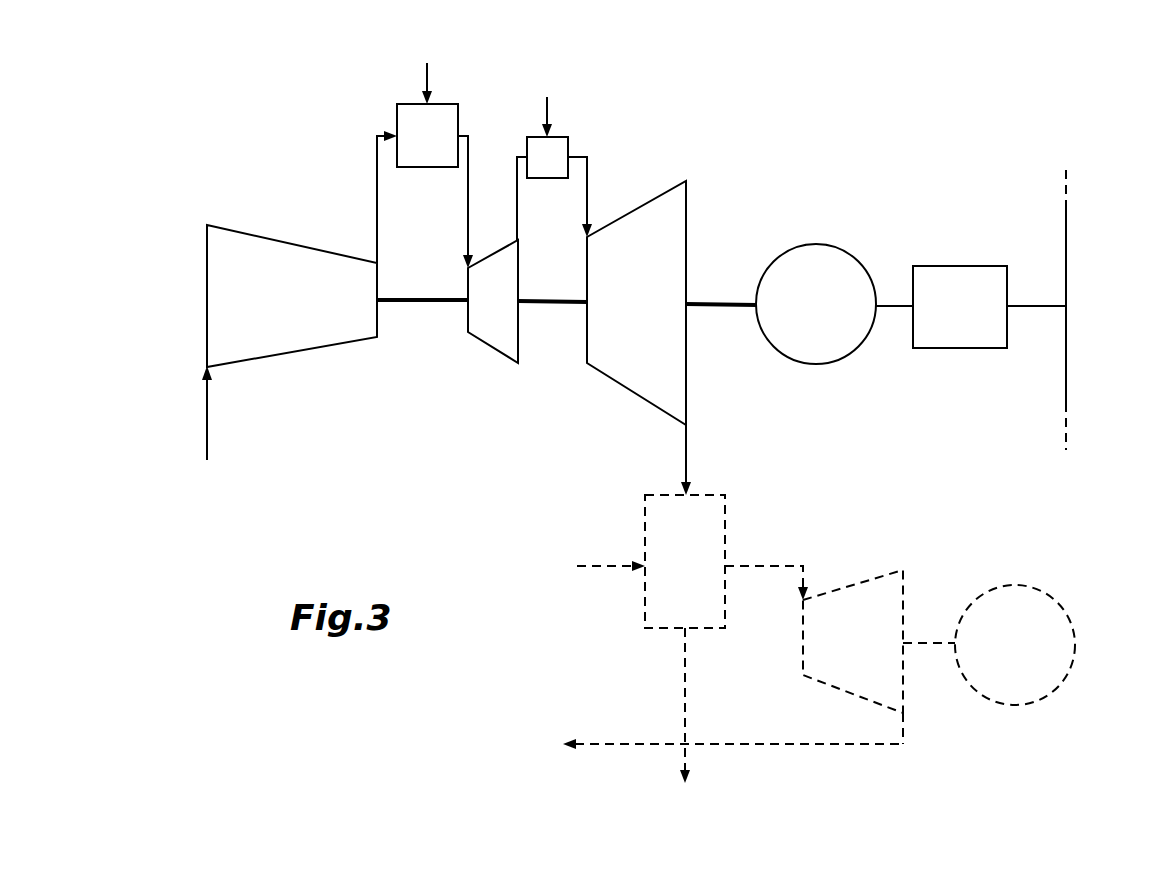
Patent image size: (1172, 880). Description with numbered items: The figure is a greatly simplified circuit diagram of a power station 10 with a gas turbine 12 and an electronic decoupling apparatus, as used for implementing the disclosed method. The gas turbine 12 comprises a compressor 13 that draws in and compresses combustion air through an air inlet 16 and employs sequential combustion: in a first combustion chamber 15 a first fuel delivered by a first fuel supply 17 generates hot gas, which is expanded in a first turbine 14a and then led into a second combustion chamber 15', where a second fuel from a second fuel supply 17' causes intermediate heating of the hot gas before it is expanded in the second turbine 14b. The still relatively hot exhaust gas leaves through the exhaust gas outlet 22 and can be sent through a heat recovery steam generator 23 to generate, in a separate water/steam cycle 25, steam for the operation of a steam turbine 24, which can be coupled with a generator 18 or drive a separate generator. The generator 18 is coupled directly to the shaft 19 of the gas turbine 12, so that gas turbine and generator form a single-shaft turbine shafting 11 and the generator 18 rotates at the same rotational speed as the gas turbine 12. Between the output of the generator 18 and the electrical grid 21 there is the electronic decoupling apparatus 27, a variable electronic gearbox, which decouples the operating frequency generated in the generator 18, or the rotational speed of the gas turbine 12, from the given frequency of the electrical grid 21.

The power station 10 is at (1035, 548).
The turbine shafting 11 is at (642, 188).
The gas turbine 12 is at (554, 451).
The compressor 13 is at (300, 316).
The first turbine 14a is at (487, 332).
The second turbine 14b is at (672, 318).
The first combustion chamber 15 is at (391, 168).
The second combustion chamber 15' is at (612, 152).
The air inlet 16 is at (208, 420).
The first fuel supply 17 is at (464, 70).
The second fuel supply 17' is at (590, 89).
The generator 18 is at (832, 321).
The shaft 19 is at (707, 298).
The electrical grid 21 is at (1068, 258).
The exhaust gas outlet 22 is at (688, 457).
The heat recovery steam generator 23 is at (701, 574).
The steam turbine 24 is at (866, 661).
The water/steam cycle 25 is at (613, 744).
The electronic decoupling apparatus 27 is at (945, 308).